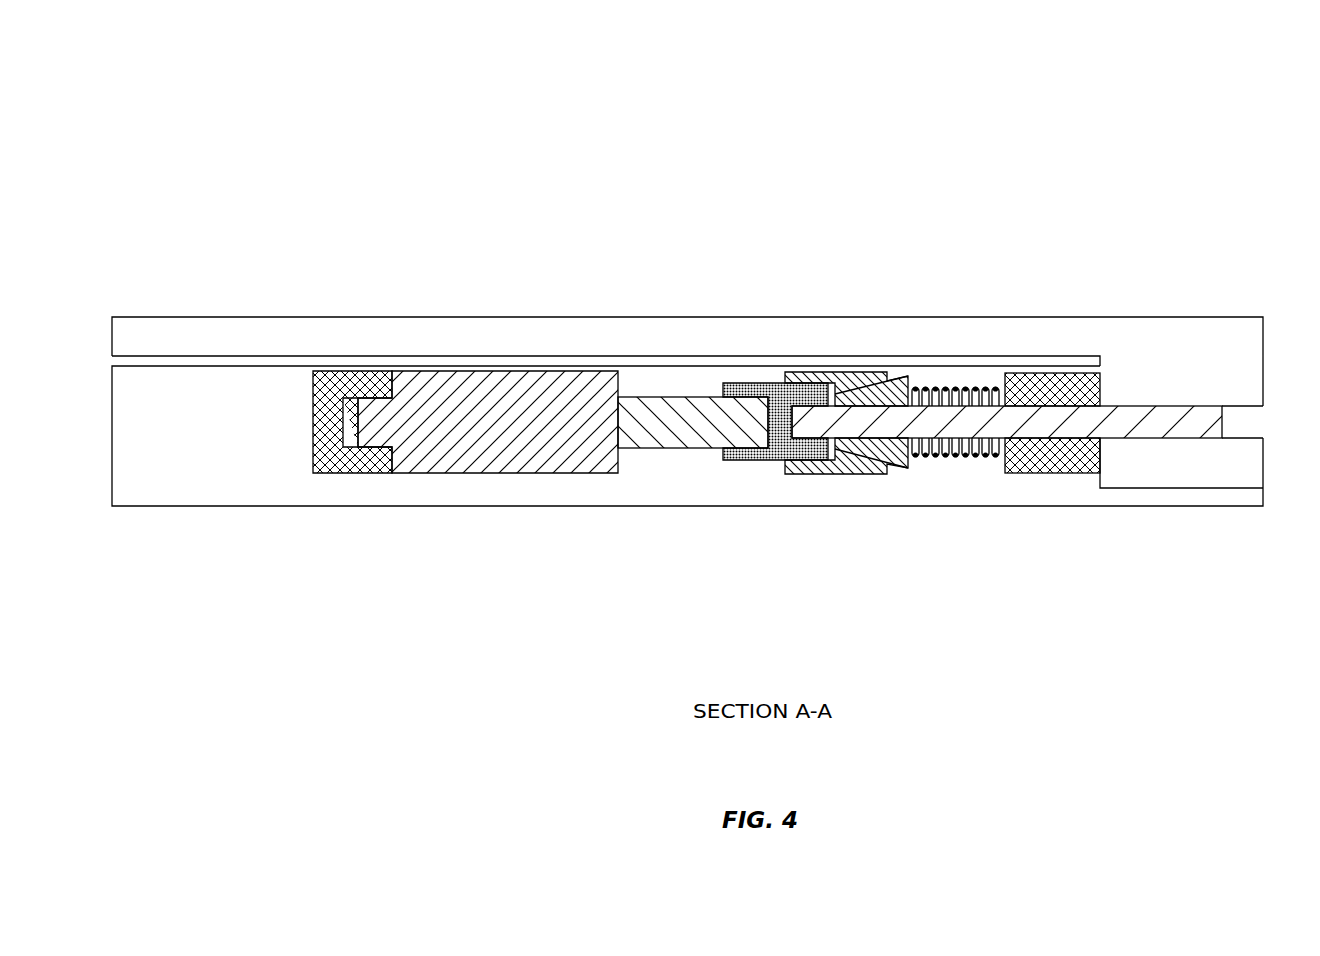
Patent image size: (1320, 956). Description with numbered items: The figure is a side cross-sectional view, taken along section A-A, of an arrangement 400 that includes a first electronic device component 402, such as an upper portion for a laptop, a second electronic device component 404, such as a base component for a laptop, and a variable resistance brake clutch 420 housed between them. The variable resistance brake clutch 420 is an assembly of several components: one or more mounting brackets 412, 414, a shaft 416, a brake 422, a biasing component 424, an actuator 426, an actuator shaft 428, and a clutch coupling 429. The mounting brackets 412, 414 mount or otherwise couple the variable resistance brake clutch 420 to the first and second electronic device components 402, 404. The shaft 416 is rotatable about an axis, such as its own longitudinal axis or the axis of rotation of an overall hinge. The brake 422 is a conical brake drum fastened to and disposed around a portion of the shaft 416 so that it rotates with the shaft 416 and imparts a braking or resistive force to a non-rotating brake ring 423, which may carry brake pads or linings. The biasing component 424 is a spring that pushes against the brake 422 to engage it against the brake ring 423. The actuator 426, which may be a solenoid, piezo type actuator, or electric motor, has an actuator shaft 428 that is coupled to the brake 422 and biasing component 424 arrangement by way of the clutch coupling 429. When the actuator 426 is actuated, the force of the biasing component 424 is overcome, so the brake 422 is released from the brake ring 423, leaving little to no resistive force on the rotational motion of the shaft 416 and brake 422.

The arrangement 400 is at (1189, 86).
The first electronic device component 402 is at (182, 317).
The second electronic device component 404 is at (180, 507).
The mounting bracket 412 is at (343, 371).
The mounting bracket 414 is at (1040, 373).
The shaft 416 is at (1127, 439).
The variable resistance brake clutch 420 is at (875, 586).
The brake 422 is at (898, 379).
The brake ring 423 is at (845, 475).
The biasing component 424 is at (963, 460).
The actuator 426 is at (432, 473).
The actuator shaft 428 is at (668, 397).
The clutch coupling 429 is at (745, 461).